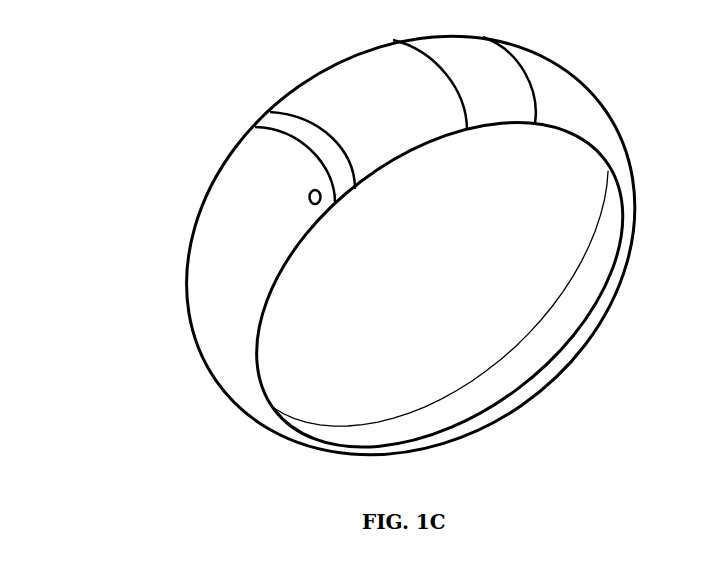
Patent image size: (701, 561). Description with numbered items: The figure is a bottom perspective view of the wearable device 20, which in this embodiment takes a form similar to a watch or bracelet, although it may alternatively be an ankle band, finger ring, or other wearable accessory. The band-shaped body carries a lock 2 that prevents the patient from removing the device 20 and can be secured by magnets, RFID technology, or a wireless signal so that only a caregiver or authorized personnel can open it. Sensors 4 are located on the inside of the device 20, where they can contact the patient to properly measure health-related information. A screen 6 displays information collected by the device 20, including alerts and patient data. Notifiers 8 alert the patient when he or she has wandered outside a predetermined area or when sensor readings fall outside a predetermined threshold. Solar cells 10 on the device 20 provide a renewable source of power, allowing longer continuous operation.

The lock 2 is at (456, 390).
The sensors 4 is at (308, 192).
The screen 6 is at (350, 93).
The notifiers 8 is at (280, 121).
The solar cells 10 is at (480, 58).
The device 20 is at (483, 39).